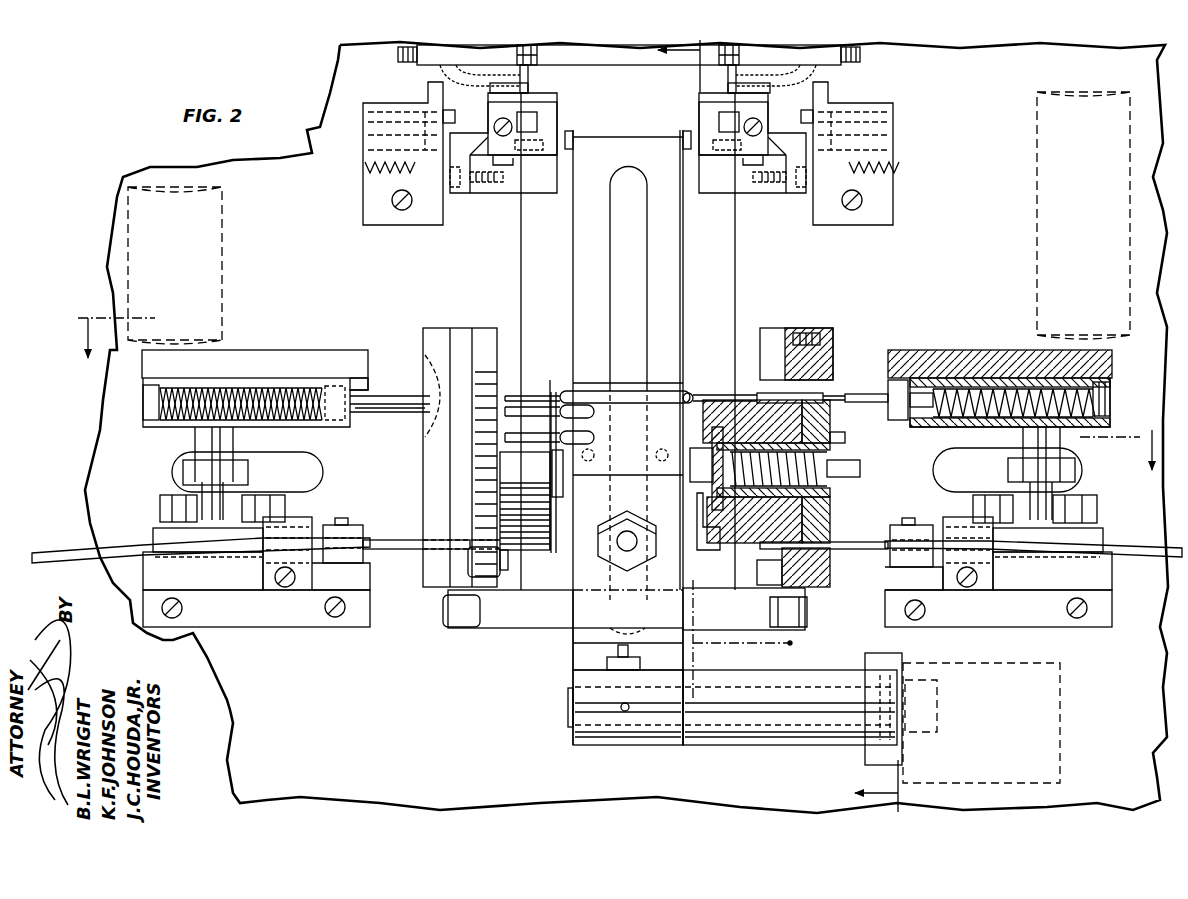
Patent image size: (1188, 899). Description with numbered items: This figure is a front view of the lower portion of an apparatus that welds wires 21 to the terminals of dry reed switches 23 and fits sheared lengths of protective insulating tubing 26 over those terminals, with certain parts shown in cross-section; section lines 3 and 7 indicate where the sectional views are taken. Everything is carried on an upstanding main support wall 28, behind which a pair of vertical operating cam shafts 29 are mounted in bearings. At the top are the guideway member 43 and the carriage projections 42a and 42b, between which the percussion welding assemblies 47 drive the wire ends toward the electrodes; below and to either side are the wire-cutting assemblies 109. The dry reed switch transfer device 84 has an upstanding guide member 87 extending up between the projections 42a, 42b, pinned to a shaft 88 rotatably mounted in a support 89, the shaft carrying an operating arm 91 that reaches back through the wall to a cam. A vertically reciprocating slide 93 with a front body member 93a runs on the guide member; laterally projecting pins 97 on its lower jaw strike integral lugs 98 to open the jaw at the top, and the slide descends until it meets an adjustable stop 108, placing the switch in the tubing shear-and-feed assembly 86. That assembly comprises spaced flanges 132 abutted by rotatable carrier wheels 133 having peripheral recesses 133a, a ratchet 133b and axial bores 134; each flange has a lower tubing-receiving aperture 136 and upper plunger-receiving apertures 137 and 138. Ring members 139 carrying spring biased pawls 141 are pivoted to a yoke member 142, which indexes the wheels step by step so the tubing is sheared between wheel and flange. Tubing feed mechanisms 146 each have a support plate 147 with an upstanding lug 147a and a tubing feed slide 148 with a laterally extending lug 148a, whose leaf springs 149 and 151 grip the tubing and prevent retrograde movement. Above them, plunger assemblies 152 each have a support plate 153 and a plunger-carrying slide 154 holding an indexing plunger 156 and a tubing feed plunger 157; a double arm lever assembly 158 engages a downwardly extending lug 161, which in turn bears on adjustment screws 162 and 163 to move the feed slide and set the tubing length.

The section line 3- 3 is at (778, 426).
The section line 7- 7 is at (615, 394).
The wires 21 is at (519, 273).
The dry reed switches 23 is at (592, 397).
The protective insulating tubing 26 is at (118, 548).
The main support wall 28 is at (240, 713).
The vertical operating cam shafts 29 is at (222, 248).
The projection of the carriage 42a is at (543, 124).
The projection of the carriage 42b is at (712, 124).
The guideway member 43 is at (541, 190).
The percussion welding assemblies 47 is at (726, 78).
The dry reed switch transfer device 84 is at (703, 241).
The tubing shear-and-feed assembly 86 is at (496, 300).
The upstanding guide member 87 is at (660, 270).
The shaft 88 is at (740, 727).
The support 89 is at (800, 745).
The operating arm 91 is at (870, 750).
The vertically reciprocating slide 93 is at (570, 625).
The front body member 93a is at (596, 578).
The laterally projecting pins 97 is at (686, 444).
The integral lugs 98 is at (660, 137).
The adjustable stop 108 is at (650, 670).
The wire-cutting assemblies 109 is at (984, 174).
The flanges 132 is at (442, 335).
The rotatable carrier wheel 133 is at (810, 418).
The peripheral recesses 133a is at (530, 404).
The ratchet 133b is at (500, 387).
The axial bores 134 is at (760, 400).
The tubing-receiving aperture 136 is at (420, 545).
The plunger-receiving aperture 137 is at (428, 432).
The plunger-receiving aperture 138 is at (428, 358).
The ring members 139 is at (457, 552).
The spring biased pawls 141 is at (505, 550).
The yoke member 142 is at (528, 630).
The tubing feed mechanisms 146 is at (292, 662).
The support plate 147 is at (245, 590).
The upstanding lug 147a is at (272, 565).
The tubing feed slide 148 is at (213, 560).
The laterally extending lug 148a is at (627, 558).
The leaf spring 149 is at (364, 523).
The leaf spring 151 is at (290, 517).
The plunger assemblies 152 is at (344, 350).
The support plate 153 is at (258, 357).
The plunger-carrying slide 154 is at (352, 372).
The indexing plunger 156 is at (376, 413).
The tubing feed plunger 157 is at (428, 387).
The double arm lever assembly 158 is at (182, 471).
The downwardly extending lug 161 is at (233, 444).
The adjustment screw 162 is at (263, 493).
The adjustment screw 163 is at (198, 500).